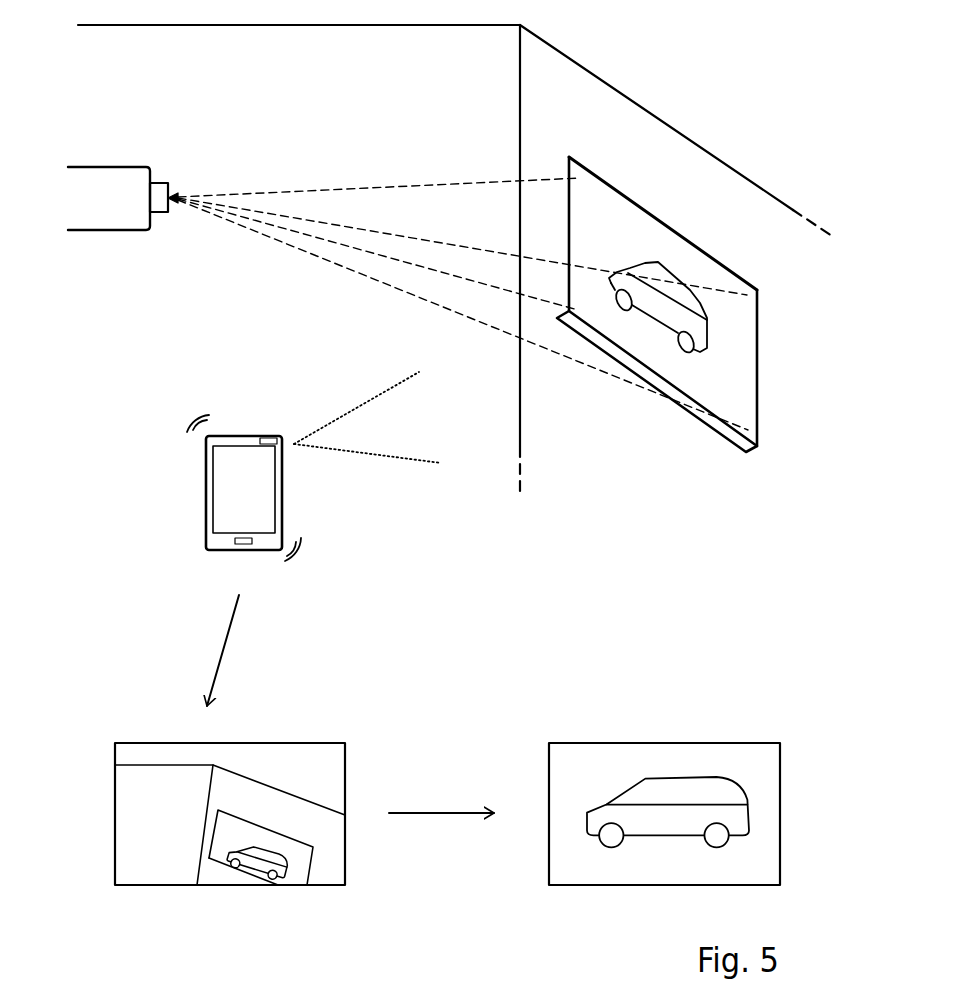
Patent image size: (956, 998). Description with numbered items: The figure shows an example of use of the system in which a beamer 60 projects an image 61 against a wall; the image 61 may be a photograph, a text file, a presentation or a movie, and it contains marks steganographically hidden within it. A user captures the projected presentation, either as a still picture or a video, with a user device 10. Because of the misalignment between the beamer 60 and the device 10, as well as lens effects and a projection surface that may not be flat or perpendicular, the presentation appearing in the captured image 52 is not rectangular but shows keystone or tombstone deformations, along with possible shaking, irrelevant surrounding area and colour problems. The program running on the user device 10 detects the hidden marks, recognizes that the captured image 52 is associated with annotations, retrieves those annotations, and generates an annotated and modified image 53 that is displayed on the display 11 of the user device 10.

The user device 10 is at (196, 533).
The display 11 is at (232, 480).
The captured image 52 is at (298, 752).
The annotated and modified image 53 is at (725, 752).
The beamer 60 is at (125, 221).
The image 61 is at (615, 222).